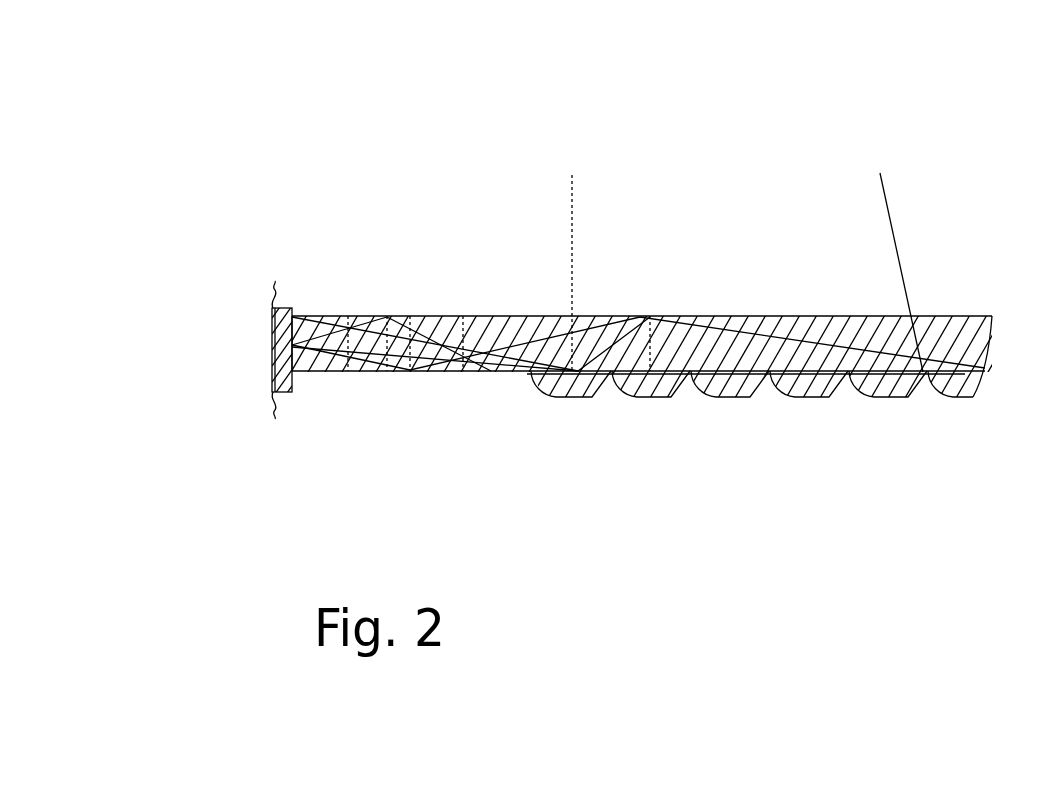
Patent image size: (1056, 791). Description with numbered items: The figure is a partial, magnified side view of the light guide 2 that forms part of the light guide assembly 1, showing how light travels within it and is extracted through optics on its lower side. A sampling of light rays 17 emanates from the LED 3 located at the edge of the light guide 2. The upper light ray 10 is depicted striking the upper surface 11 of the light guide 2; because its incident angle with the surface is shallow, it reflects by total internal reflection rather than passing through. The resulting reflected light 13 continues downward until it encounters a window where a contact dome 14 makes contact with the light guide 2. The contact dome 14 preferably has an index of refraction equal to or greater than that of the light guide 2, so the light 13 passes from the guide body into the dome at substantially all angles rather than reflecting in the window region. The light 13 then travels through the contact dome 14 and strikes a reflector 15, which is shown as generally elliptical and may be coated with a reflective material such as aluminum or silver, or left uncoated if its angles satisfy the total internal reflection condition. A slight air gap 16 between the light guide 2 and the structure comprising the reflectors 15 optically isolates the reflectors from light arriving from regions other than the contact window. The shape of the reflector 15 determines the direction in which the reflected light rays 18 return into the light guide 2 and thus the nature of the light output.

The light guide assembly 1 is at (333, 247).
The light guide 2 is at (318, 328).
The LED 3 is at (275, 345).
The upper light ray 10 is at (357, 316).
The upper surface 11 is at (383, 318).
The reflected light 13 is at (488, 316).
The contact dome 14 is at (575, 375).
The reflector 15 is at (618, 386).
The air gap 16 is at (765, 373).
The light rays 17 is at (339, 340).
The reflected light rays 18 is at (597, 292).